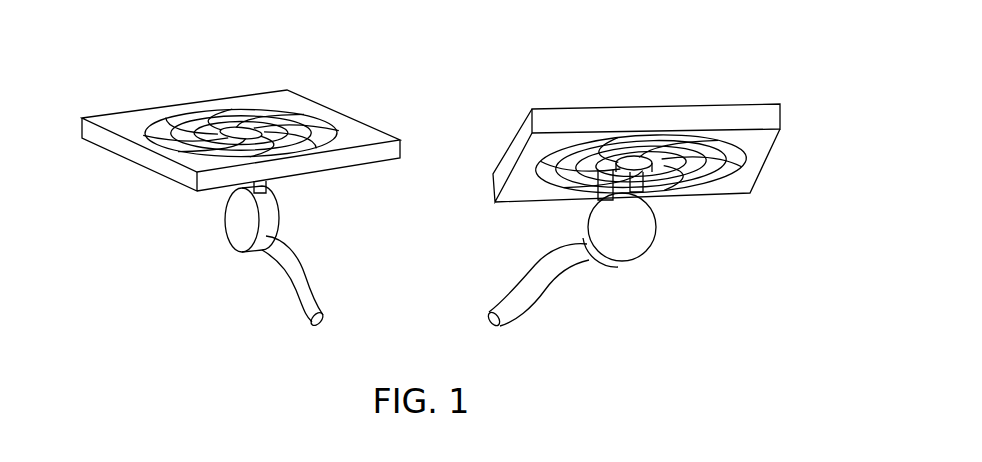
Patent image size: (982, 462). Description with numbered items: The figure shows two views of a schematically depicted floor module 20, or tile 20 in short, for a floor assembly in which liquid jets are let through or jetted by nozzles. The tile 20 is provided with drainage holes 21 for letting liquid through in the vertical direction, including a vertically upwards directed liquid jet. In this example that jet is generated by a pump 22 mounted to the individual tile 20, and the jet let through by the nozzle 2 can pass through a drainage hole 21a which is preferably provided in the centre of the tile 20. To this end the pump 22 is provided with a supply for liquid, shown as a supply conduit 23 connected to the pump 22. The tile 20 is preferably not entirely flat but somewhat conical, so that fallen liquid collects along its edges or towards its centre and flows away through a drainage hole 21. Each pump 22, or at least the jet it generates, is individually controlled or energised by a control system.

The floor module 20 is at (328, 60).
The drainage holes 21 is at (152, 118).
The drainage hole 21a is at (240, 137).
The nozzle 2 is at (640, 182).
The pump 22 is at (240, 220).
The supply conduit 23 is at (298, 273).